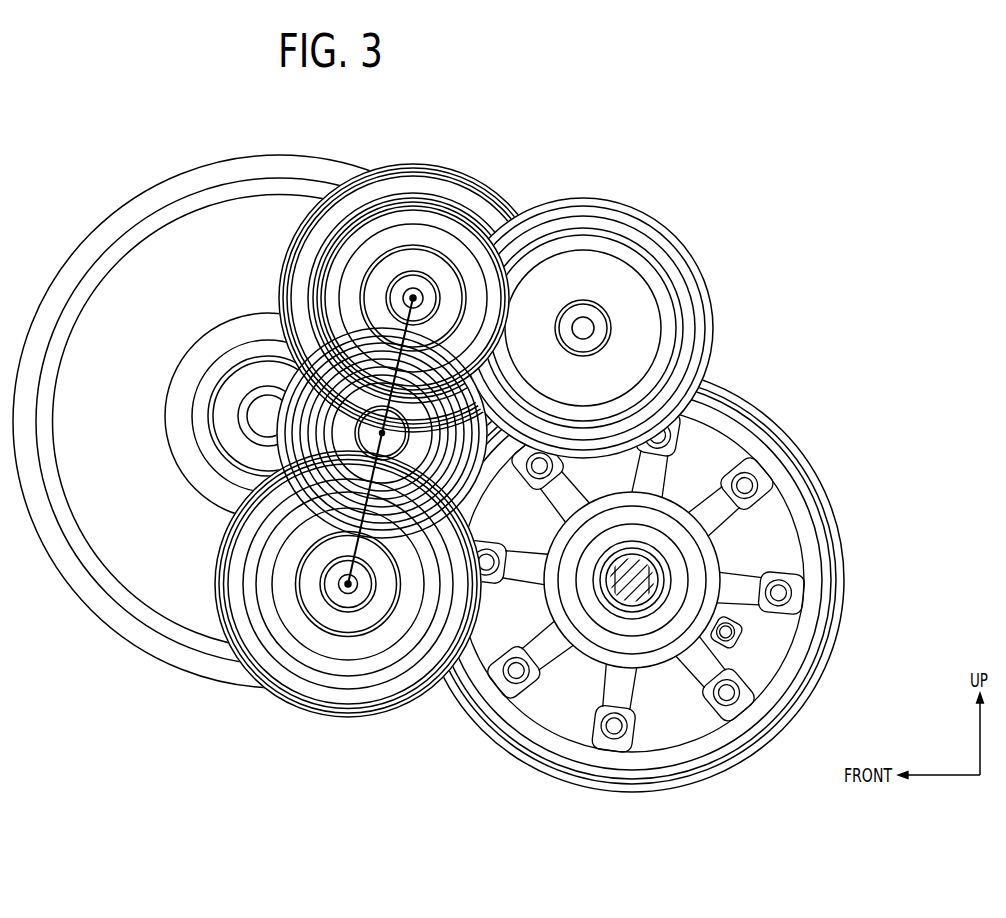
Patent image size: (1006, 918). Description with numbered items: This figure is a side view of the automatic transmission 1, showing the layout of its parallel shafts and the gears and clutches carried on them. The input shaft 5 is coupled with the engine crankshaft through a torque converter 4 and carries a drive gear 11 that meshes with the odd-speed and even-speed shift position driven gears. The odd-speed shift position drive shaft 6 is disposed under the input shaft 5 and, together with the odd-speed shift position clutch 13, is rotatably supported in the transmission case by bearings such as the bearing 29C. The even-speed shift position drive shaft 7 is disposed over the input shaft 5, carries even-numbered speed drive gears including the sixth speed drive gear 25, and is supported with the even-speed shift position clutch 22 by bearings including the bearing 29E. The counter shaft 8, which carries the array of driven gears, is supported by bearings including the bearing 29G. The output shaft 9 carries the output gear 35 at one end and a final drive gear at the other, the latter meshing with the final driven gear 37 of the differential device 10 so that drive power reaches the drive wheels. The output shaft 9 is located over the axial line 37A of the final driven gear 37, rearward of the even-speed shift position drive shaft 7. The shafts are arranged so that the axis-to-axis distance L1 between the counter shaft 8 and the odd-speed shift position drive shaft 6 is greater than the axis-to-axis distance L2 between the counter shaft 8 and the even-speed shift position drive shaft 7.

The automatic transmission 1 is at (631, 158).
The torque converter 4 is at (210, 222).
The input shaft 5 is at (265, 407).
The odd-speed shift position drive shaft 6 is at (345, 662).
The even-speed shift position drive shaft 7 is at (430, 225).
The counter shaft 8 is at (252, 474).
The output shaft 9 is at (653, 322).
The differential device 10 is at (660, 580).
The drive gear 11 is at (248, 399).
The odd-speed shift position clutch 13 is at (317, 616).
The even-speed shift position clutch 22 is at (381, 260).
The 6th speed drive gear 25 is at (429, 257).
The bearing 29C is at (289, 617).
The bearing 29E is at (341, 298).
The bearing 29G is at (274, 422).
The output gear 35 is at (614, 328).
The final driven gear 37 is at (752, 405).
The axial line of the final driven gear 37A is at (722, 580).
The axis-to-axis distance between counter shaft and odd-speed shift position drive s L1 is at (371, 509).
The axis-to-axis distance between counter shaft and even-speed shift position drive L2 is at (404, 373).